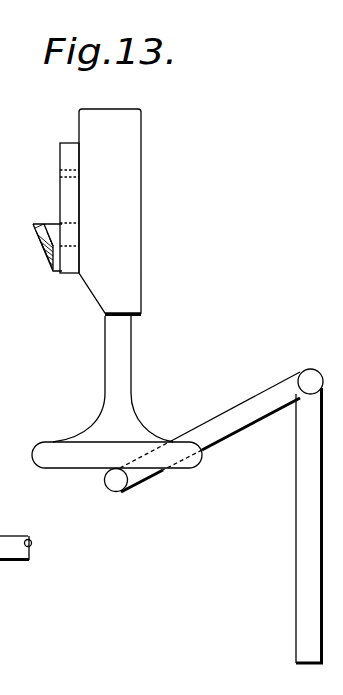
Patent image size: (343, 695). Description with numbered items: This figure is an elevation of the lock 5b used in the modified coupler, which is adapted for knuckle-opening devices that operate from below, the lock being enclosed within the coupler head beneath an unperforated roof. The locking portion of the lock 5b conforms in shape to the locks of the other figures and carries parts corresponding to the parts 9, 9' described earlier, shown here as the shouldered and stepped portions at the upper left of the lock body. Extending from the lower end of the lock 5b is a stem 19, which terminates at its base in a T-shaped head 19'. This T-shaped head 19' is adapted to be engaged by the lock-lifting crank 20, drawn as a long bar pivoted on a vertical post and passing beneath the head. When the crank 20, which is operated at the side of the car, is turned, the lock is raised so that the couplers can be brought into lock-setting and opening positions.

The lock 5b is at (110, 212).
The locking portion part 9 is at (38, 247).
The locking portion part 9' is at (53, 208).
The stem 19 is at (113, 379).
The T-shaped head 19' is at (117, 468).
The lock-lifting crank 20 is at (118, 492).